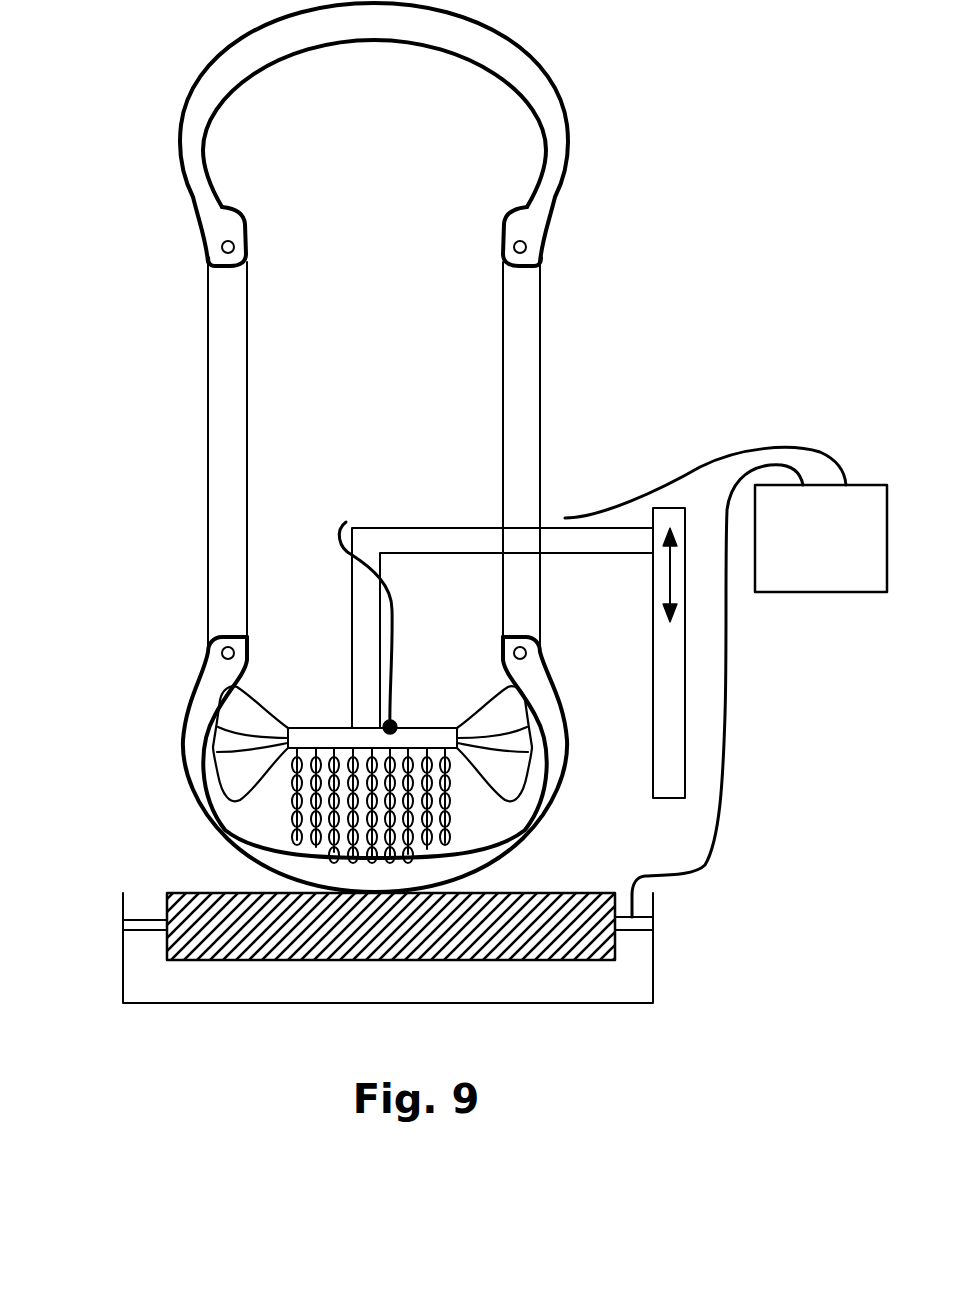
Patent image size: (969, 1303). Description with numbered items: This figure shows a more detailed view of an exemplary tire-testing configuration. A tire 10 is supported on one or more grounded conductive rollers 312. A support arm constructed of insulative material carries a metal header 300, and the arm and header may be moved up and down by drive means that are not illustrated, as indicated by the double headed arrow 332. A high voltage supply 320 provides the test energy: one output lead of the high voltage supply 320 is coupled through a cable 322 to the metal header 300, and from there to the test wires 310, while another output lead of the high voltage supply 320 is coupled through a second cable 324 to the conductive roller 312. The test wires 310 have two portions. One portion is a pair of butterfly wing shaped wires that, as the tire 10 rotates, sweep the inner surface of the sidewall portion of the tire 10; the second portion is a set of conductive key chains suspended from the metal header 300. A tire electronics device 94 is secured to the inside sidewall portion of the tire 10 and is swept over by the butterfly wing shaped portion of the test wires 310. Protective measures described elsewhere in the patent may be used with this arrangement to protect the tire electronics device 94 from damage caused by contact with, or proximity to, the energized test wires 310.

The tire 10 is at (181, 128).
The tire electronics device 94 is at (215, 712).
The metal header 300 is at (427, 727).
The test wires 310 is at (207, 759).
The conductive roller 312 is at (333, 962).
The high voltage supply 320 is at (882, 485).
The cable 322 is at (566, 515).
The cable 324 is at (723, 783).
The double headed arrow 332 is at (670, 567).